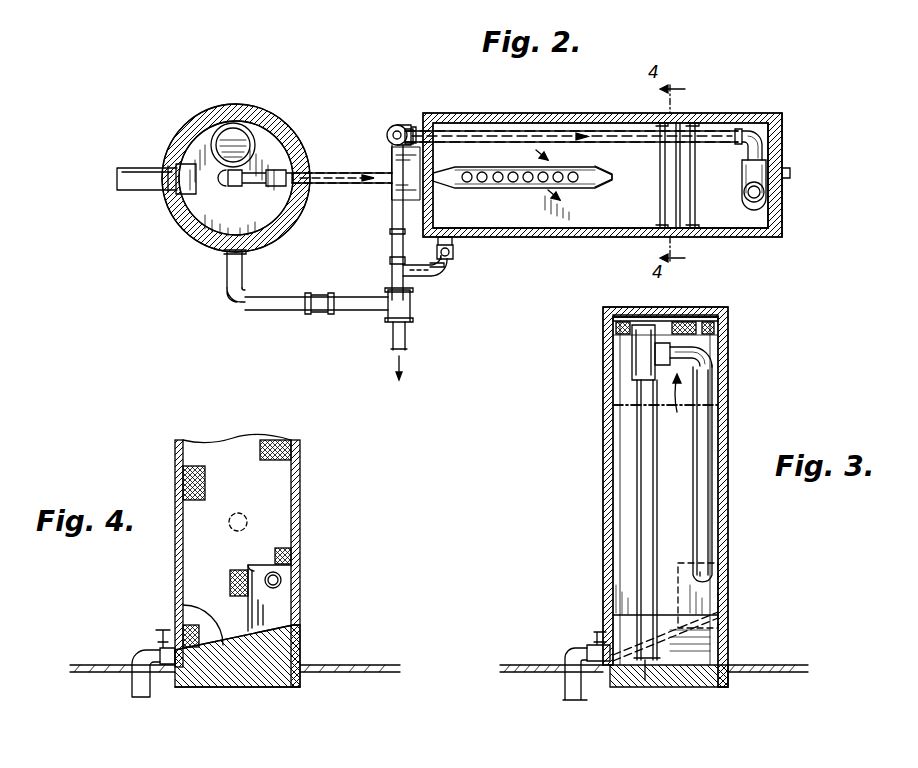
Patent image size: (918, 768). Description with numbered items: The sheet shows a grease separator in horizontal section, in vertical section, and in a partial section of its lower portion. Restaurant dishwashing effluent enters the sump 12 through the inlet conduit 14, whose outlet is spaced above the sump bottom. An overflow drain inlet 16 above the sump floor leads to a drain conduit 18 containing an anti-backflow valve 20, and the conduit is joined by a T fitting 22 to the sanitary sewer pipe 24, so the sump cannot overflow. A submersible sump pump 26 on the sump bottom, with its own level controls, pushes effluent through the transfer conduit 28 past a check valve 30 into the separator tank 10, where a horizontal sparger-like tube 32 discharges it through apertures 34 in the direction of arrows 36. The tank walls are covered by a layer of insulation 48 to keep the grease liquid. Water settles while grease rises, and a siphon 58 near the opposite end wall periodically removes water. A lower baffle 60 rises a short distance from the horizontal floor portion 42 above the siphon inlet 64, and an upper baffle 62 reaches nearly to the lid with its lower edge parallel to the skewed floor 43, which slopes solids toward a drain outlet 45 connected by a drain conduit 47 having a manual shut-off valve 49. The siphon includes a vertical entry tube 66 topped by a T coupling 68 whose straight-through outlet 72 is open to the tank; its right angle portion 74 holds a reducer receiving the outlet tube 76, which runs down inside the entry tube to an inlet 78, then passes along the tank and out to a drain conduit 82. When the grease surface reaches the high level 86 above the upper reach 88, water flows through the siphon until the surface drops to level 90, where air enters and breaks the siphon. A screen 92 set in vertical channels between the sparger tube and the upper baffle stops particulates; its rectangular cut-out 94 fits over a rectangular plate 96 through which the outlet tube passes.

In FIG. 2, the separator tank 10 is at (483, 114).
In FIG. 3, the separator tank 10 is at (604, 468).
In FIG. 4, the separator tank 10 is at (176, 469).
In FIG. 2, the sump 12 is at (282, 111).
In FIG. 2, the inlet conduit 14 is at (132, 168).
In FIG. 2, the overflow drain inlet 16 is at (204, 246).
In FIG. 2, the drain conduit 18 is at (232, 303).
In FIG. 2, the anti-backflow valve 20 is at (318, 296).
In FIG. 2, the T fitting 22 is at (412, 303).
In FIG. 2, the sanitary sewer pipe 24 is at (408, 333).
In FIG. 2, the submersible sump pump 26 is at (232, 128).
In FIG. 2, the transfer conduit 28 is at (348, 172).
In FIG. 2, the check valve 30 is at (288, 172).
In FIG. 2, the sparger-like tube 32 is at (590, 188).
In FIG. 4, the sparger-like tube 32 is at (248, 522).
In FIG. 2, the apertures 34 is at (502, 183).
In FIG. 2, the arrows 36 is at (536, 150).
In FIG. 2, the horizontal floor portion 42 is at (736, 228).
In FIG. 2, the skewed floor 43 is at (606, 230).
In FIG. 4, the skewed floor 43 is at (182, 604).
In FIG. 2, the drain outlet 45 is at (460, 236).
In FIG. 3, the drain outlet 45 is at (596, 650).
In FIG. 3, the drain conduit 47 is at (564, 682).
In FIG. 4, the drain conduit 47 is at (134, 683).
In FIG. 2, the layer of insulation 48 is at (595, 130).
In FIG. 2, the manual shut-off valve 49 is at (446, 272).
In FIG. 4, the manual shut-off valve 49 is at (156, 631).
In FIG. 3, the siphon 58 is at (676, 409).
In FIG. 3, the lower baffle 60 is at (712, 637).
In FIG. 3, the upper baffle 62 is at (678, 538).
In FIG. 3, the inlet 64 is at (646, 678).
In FIG. 3, the entry tube 66 is at (642, 525).
In FIG. 2, the T coupling 68 is at (744, 195).
In FIG. 3, the T coupling 68 is at (632, 345).
In FIG. 2, the outlet 72 is at (782, 212).
In FIG. 3, the outlet 72 is at (634, 310).
In FIG. 3, the right angle portion 74 is at (664, 342).
In FIG. 2, the outlet tube 76 is at (742, 136).
In FIG. 3, the outlet tube 76 is at (708, 516).
In FIG. 4, the outlet tube 76 is at (282, 581).
In FIG. 3, the inlet 78 is at (614, 410).
In FIG. 2, the drain conduit 82 is at (391, 226).
In FIG. 3, the high level 86 is at (728, 326).
In FIG. 3, the upper reach 88 is at (700, 346).
In FIG. 3, the level 90 is at (702, 389).
In FIG. 2, the screen 92 is at (658, 171).
In FIG. 3, the screen 92 is at (700, 322).
In FIG. 4, the screen 92 is at (276, 492).
In FIG. 4, the rectangular cut-out 94 is at (250, 566).
In FIG. 3, the rectangular plate 96 is at (714, 598).
In FIG. 4, the rectangular plate 96 is at (274, 613).